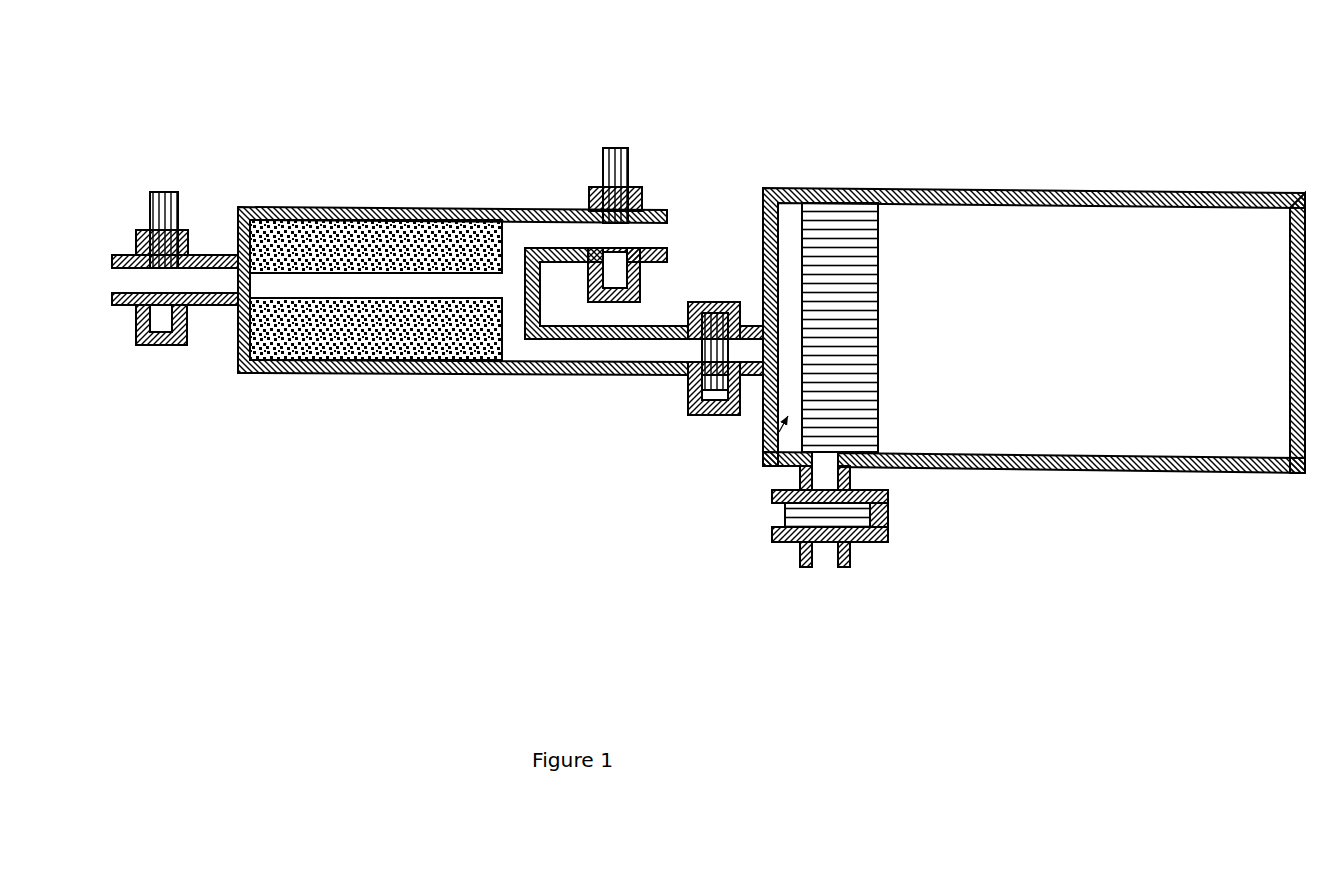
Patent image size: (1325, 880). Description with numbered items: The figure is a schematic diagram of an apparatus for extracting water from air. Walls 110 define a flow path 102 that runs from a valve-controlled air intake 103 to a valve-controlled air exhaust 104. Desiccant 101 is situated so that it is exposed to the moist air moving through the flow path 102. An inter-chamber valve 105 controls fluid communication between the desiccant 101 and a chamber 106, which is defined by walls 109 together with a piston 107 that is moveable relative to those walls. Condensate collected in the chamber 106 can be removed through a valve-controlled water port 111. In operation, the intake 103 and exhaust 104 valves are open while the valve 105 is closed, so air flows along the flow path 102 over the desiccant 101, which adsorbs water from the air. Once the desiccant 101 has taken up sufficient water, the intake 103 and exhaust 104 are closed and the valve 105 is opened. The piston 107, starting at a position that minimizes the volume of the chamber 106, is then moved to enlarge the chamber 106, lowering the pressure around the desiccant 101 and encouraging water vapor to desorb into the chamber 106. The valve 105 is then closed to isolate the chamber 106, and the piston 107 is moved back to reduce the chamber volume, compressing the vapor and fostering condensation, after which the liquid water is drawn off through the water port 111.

The desiccant 101 is at (376, 321).
The flow path 102 is at (216, 367).
The valve-controlled air intake 103 is at (125, 268).
The valve-controlled air exhaust 104 is at (664, 168).
The valve 105 is at (678, 394).
The chamber 106 is at (733, 477).
The piston 107 is at (904, 303).
The walls 109 is at (1034, 366).
The walls 110 is at (463, 204).
The valve-controlled water port 111 is at (886, 516).